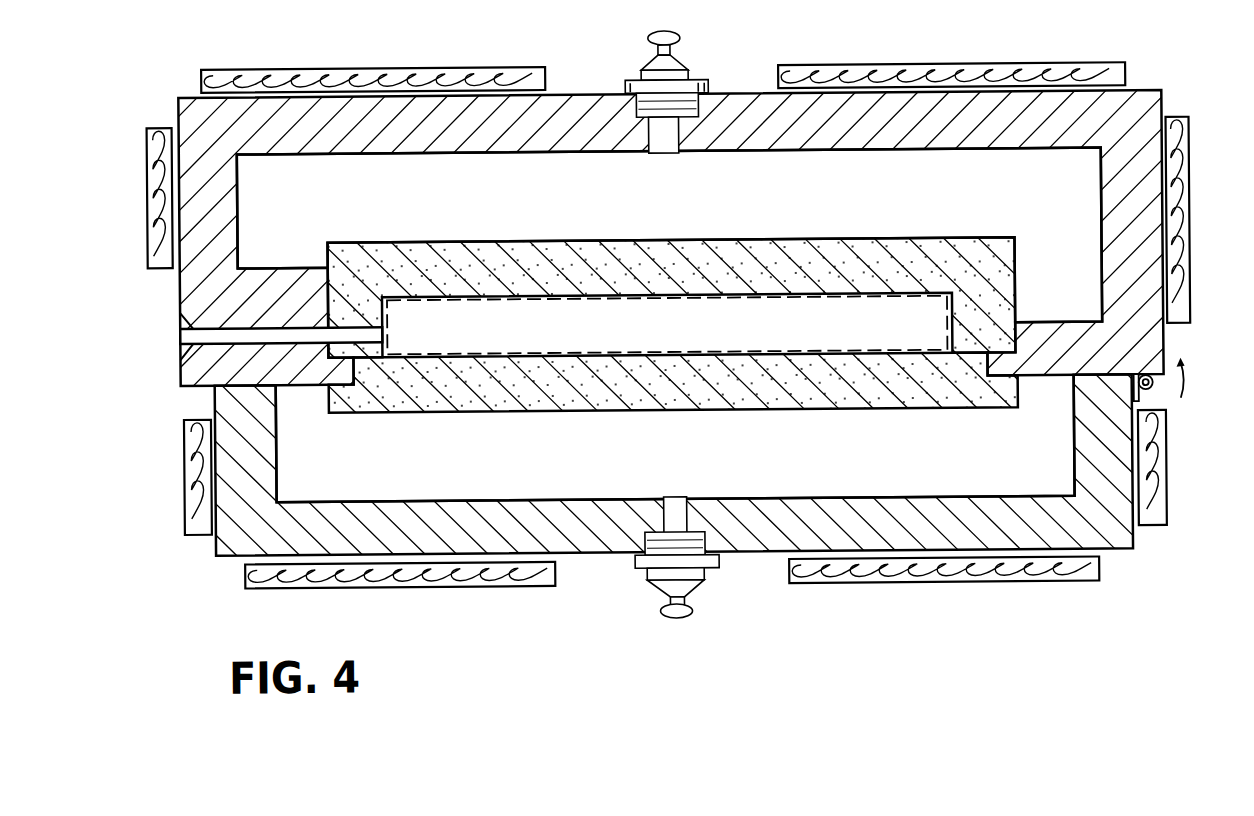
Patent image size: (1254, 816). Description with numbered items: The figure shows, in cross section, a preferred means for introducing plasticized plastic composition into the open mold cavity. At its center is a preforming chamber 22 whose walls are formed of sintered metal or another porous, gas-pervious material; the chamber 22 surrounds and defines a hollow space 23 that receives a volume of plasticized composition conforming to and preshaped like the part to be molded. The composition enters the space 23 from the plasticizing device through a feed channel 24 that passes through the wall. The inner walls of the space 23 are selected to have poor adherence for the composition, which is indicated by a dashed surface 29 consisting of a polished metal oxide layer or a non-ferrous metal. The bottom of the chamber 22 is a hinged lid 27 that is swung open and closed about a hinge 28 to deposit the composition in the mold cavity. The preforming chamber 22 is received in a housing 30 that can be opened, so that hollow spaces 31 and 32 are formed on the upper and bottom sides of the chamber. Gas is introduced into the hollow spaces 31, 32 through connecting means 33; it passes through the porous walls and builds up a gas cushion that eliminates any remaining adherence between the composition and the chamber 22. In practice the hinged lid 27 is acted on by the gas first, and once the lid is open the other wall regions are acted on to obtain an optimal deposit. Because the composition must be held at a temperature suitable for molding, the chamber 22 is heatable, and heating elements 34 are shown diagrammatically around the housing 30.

The preforming chamber 22 is at (858, 186).
The hollow space 23 is at (437, 338).
The feed channel 24 is at (230, 331).
The hinged lid 27 is at (856, 406).
The hinge 28 is at (1152, 400).
The surface 29 is at (567, 304).
The housing 30 is at (755, 558).
The hollow space 31 is at (365, 165).
The hollow space 32 is at (998, 486).
The connecting means 33 is at (678, 63).
The heating elements 34 is at (255, 79).